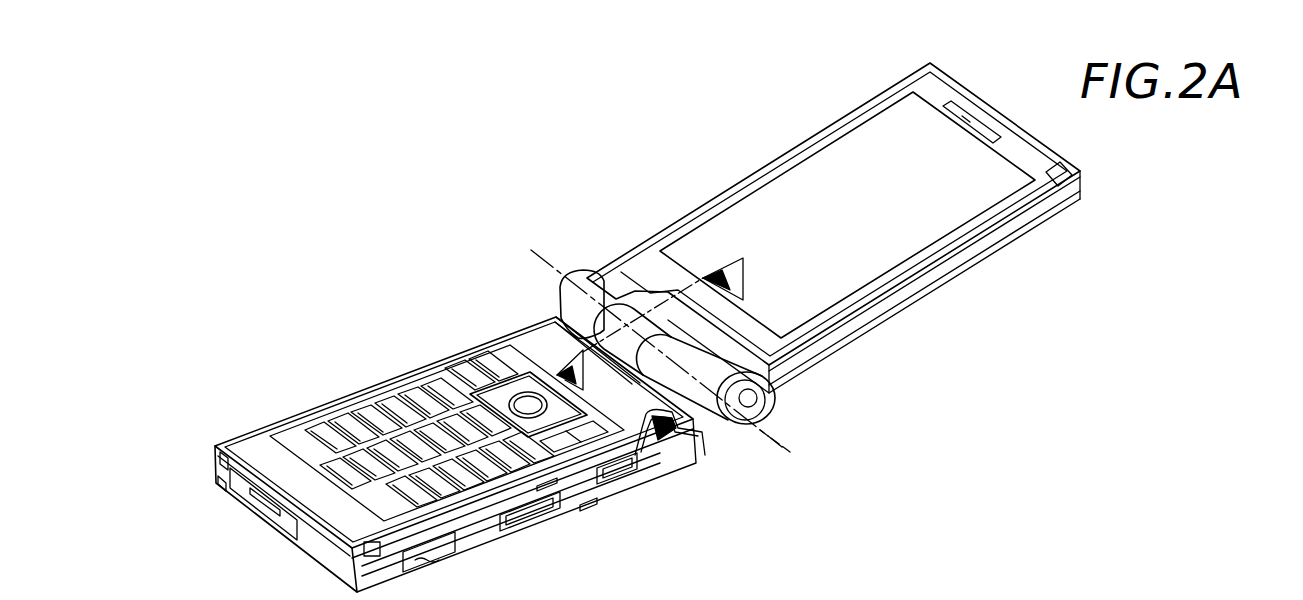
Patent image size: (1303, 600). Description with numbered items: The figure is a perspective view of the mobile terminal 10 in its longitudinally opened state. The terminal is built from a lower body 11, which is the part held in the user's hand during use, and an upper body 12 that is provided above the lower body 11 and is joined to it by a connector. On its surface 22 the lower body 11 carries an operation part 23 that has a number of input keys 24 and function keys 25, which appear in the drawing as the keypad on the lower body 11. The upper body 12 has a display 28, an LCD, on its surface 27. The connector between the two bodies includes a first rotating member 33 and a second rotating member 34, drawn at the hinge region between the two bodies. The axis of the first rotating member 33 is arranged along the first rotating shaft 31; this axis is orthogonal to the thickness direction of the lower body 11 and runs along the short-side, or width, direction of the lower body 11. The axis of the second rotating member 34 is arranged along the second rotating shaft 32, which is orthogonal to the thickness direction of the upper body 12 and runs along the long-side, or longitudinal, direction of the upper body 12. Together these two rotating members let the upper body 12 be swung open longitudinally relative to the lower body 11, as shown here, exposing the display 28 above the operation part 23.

The mobile terminal 10 is at (716, 134).
The lower body 11 is at (483, 525).
The upper body 12 is at (1018, 237).
The surface 22 is at (533, 335).
The operation part 23 is at (440, 283).
The input keys 24 is at (386, 415).
The function keys 25 is at (528, 405).
The surface 27 is at (917, 277).
The display 28 is at (917, 217).
The first rotating shaft 31 is at (533, 263).
The second rotating shaft 32 is at (870, 310).
The first rotating member 33 is at (652, 362).
The second rotating member 34 is at (765, 385).